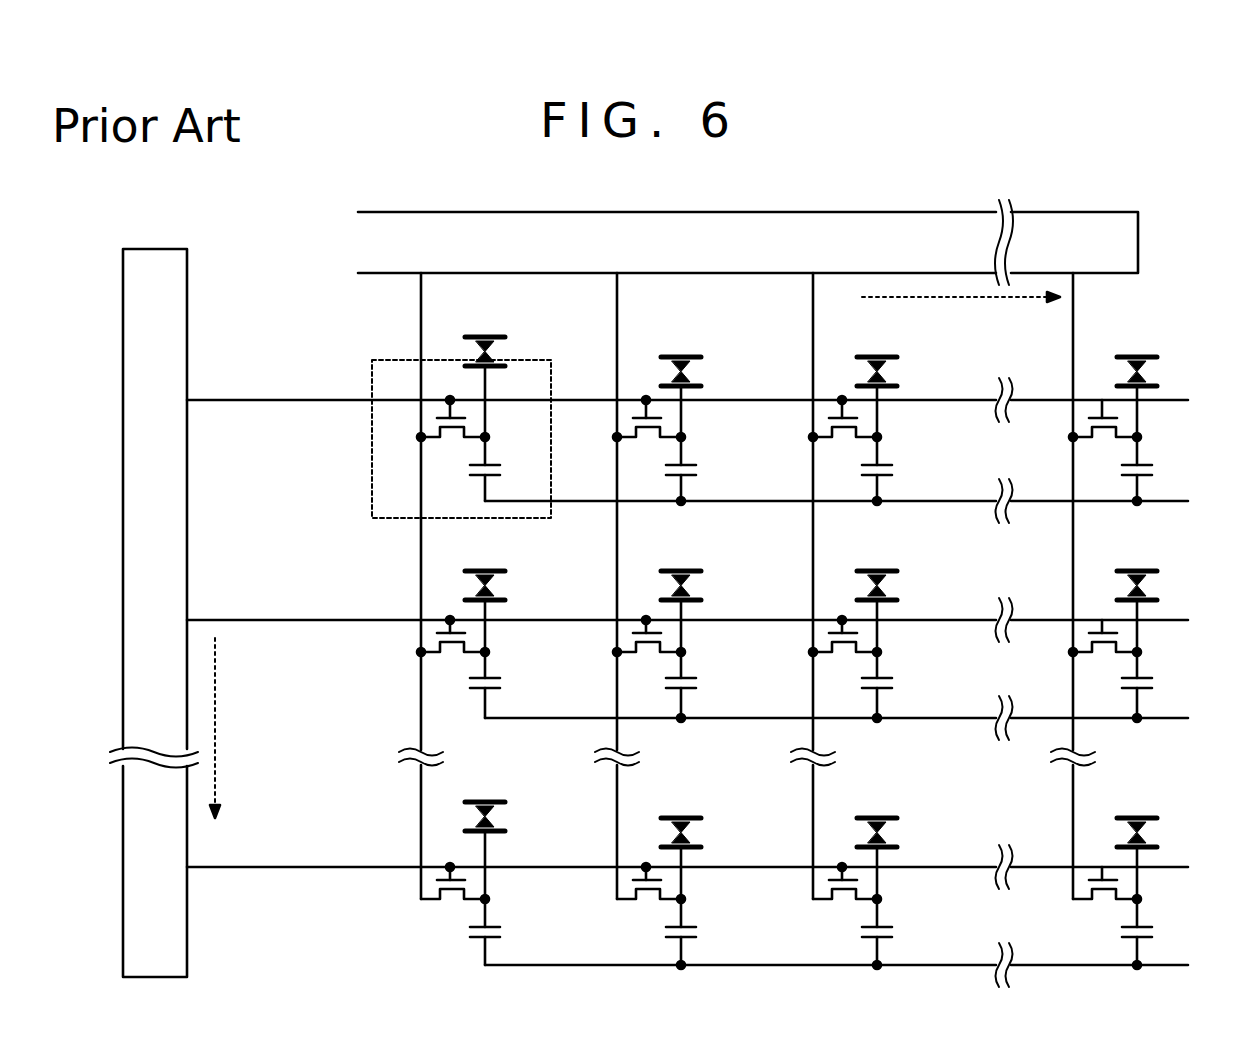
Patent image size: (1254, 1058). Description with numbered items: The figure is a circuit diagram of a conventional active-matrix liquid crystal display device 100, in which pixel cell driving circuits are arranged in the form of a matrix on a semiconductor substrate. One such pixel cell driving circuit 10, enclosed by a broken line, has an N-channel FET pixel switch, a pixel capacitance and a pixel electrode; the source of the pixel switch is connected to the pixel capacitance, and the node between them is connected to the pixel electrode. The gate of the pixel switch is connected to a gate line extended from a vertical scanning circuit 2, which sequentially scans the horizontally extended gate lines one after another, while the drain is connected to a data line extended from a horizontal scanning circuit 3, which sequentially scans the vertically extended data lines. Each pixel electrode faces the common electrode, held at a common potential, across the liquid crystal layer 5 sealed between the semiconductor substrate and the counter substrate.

The liquid crystal display device 100 is at (237, 307).
The vertical scanning circuit 2 is at (123, 468).
The horizontal scanning circuit 3 is at (1138, 248).
The pixel cell driving circuit 10 is at (373, 452).
The liquid crystal layer 5 is at (472, 343).